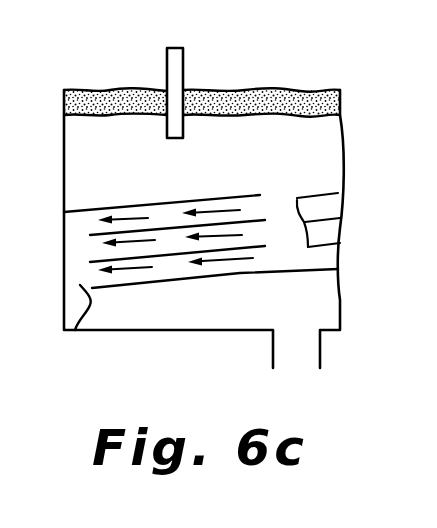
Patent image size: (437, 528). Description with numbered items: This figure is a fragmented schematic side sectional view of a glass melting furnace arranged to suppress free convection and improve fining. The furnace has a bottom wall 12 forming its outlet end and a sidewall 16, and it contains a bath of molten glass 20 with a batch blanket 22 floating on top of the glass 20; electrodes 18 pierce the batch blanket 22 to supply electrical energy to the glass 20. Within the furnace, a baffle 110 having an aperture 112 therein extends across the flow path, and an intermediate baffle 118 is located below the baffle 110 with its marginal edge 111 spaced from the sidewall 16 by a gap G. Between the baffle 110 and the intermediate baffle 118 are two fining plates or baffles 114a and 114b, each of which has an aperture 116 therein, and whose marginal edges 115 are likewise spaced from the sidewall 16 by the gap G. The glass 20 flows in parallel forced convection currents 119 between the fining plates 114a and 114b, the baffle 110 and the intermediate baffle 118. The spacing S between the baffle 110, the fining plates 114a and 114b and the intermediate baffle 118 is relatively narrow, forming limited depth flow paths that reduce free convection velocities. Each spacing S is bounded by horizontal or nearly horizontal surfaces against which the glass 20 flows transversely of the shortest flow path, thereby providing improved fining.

The bottom wall 12 is at (150, 331).
The sidewall 16 is at (64, 272).
The electrodes 18 is at (185, 68).
The molten glass 20 is at (75, 148).
The batch blanket 22 is at (113, 95).
The baffle 110 is at (88, 208).
The marginal edge 111 is at (77, 331).
The aperture 112 is at (279, 197).
The fining plate 114a is at (254, 216).
The fining plate 114b is at (256, 248).
The marginal edges 115 is at (90, 259).
The aperture 116 is at (297, 200).
The intermediate baffle 118 is at (128, 284).
The forced convection currents 119 is at (152, 267).
The gap G is at (79, 286).
The spacing S is at (172, 215).